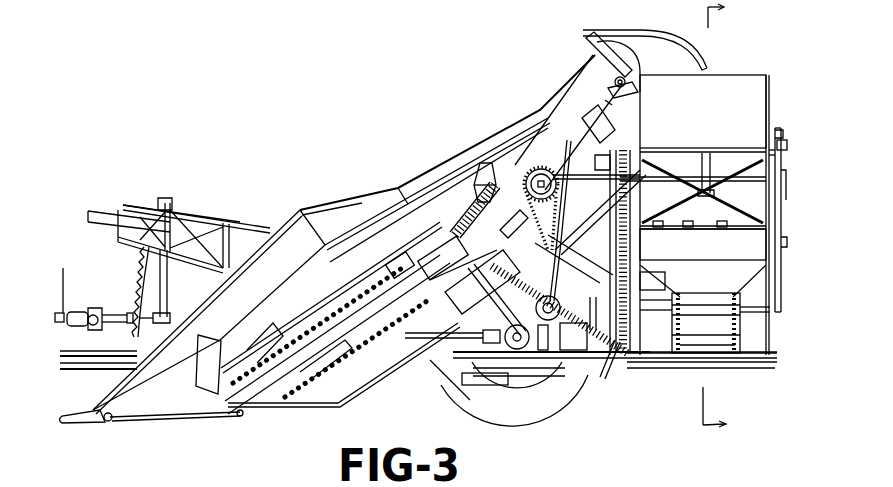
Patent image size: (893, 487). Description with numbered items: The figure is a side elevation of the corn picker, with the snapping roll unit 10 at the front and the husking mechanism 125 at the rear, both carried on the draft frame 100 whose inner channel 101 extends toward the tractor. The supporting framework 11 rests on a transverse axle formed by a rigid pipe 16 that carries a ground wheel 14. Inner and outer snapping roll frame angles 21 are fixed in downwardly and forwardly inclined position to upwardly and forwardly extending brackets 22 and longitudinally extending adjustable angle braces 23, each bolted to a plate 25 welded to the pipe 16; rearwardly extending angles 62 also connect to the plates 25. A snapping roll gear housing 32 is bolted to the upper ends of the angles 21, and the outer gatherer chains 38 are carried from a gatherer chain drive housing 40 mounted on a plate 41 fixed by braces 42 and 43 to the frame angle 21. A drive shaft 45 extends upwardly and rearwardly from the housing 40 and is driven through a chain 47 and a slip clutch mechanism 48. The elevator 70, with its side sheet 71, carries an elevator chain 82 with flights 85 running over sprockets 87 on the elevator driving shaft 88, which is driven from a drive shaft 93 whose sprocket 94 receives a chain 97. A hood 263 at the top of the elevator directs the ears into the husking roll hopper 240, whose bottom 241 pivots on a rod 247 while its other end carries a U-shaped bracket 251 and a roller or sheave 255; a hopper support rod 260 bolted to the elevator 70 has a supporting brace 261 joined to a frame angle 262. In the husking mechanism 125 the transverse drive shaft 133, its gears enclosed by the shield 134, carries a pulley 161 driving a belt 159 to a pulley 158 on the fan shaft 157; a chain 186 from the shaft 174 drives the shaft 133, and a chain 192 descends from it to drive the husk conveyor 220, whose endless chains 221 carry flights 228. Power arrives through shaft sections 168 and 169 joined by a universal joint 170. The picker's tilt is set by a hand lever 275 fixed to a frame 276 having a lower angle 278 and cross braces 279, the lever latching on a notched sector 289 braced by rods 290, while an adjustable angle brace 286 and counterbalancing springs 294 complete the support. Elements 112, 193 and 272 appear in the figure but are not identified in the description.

The snapping roll unit 10 is at (354, 186).
The supporting framework 11 is at (370, 362).
The ground wheel 14 is at (556, 405).
The axle pipe 16 is at (520, 352).
The snapping roll frame angles 21 is at (368, 345).
The brackets 22 is at (484, 302).
The adjustable angle braces 23 is at (450, 333).
The plate 25 is at (493, 330).
The snapping roll gear housing 32 is at (514, 210).
The gatherer chains 38 is at (324, 322).
The gatherer chain drive housing 40 is at (413, 262).
The plate 41 is at (410, 231).
The brace 42 is at (246, 414).
The brace 43 is at (455, 260).
The drive shaft 45 is at (430, 227).
The chain 47 is at (492, 222).
The slip clutch mechanism 48 is at (470, 185).
The rearwardly extending angles 62 is at (578, 323).
The elevator 70 is at (590, 47).
The side sheet 71 is at (582, 83).
The elevator chain 82 is at (612, 126).
The flights 85 is at (594, 160).
The sprockets 87 is at (612, 94).
The elevator driving shaft 88 is at (614, 80).
The drive shaft 93 is at (542, 166).
The sprocket 94 is at (536, 172).
The chain 97 is at (558, 205).
The draft frame 100 is at (100, 380).
The channel 101 is at (63, 368).
The axle bracket 112 is at (540, 355).
The husking mechanism 125 is at (760, 280).
The transverse drive shaft 133 is at (788, 240).
The shield 134 is at (703, 244).
The fan shaft 157 is at (787, 150).
The pulley 158 is at (784, 138).
The belt 159 is at (784, 182).
The pulley 161 is at (783, 212).
The shaft section 168 is at (66, 262).
The shaft section 169 is at (130, 312).
The universal joint 170 is at (94, 308).
The shaft 174 is at (562, 296).
The chain 186 is at (600, 266).
The chain 192 is at (631, 200).
The bracket 193 is at (640, 270).
The husk conveyor 220 is at (705, 352).
The endless chains 221 is at (706, 323).
The flights 228 is at (718, 282).
The husking roll hopper 240 is at (773, 95).
The hopper bottom 241 is at (702, 191).
The rod 247 is at (728, 222).
The U-shaped bracket 251 is at (710, 147).
The roller or sheave 255 is at (711, 180).
The hopper support rod 260 is at (684, 178).
The supporting brace 261 is at (615, 222).
The frame angle 262 is at (566, 145).
The hood 263 is at (706, 60).
The truss frame 272 is at (262, 228).
The hand lever 275 is at (110, 206).
The frame 276 is at (221, 212).
The lower angle 278 is at (204, 266).
The cross braces 279 is at (198, 212).
The adjustable angle brace 286 is at (472, 386).
The notched sector 289 is at (141, 260).
The rods 290 is at (196, 292).
The counterbalancing springs 294 is at (600, 378).